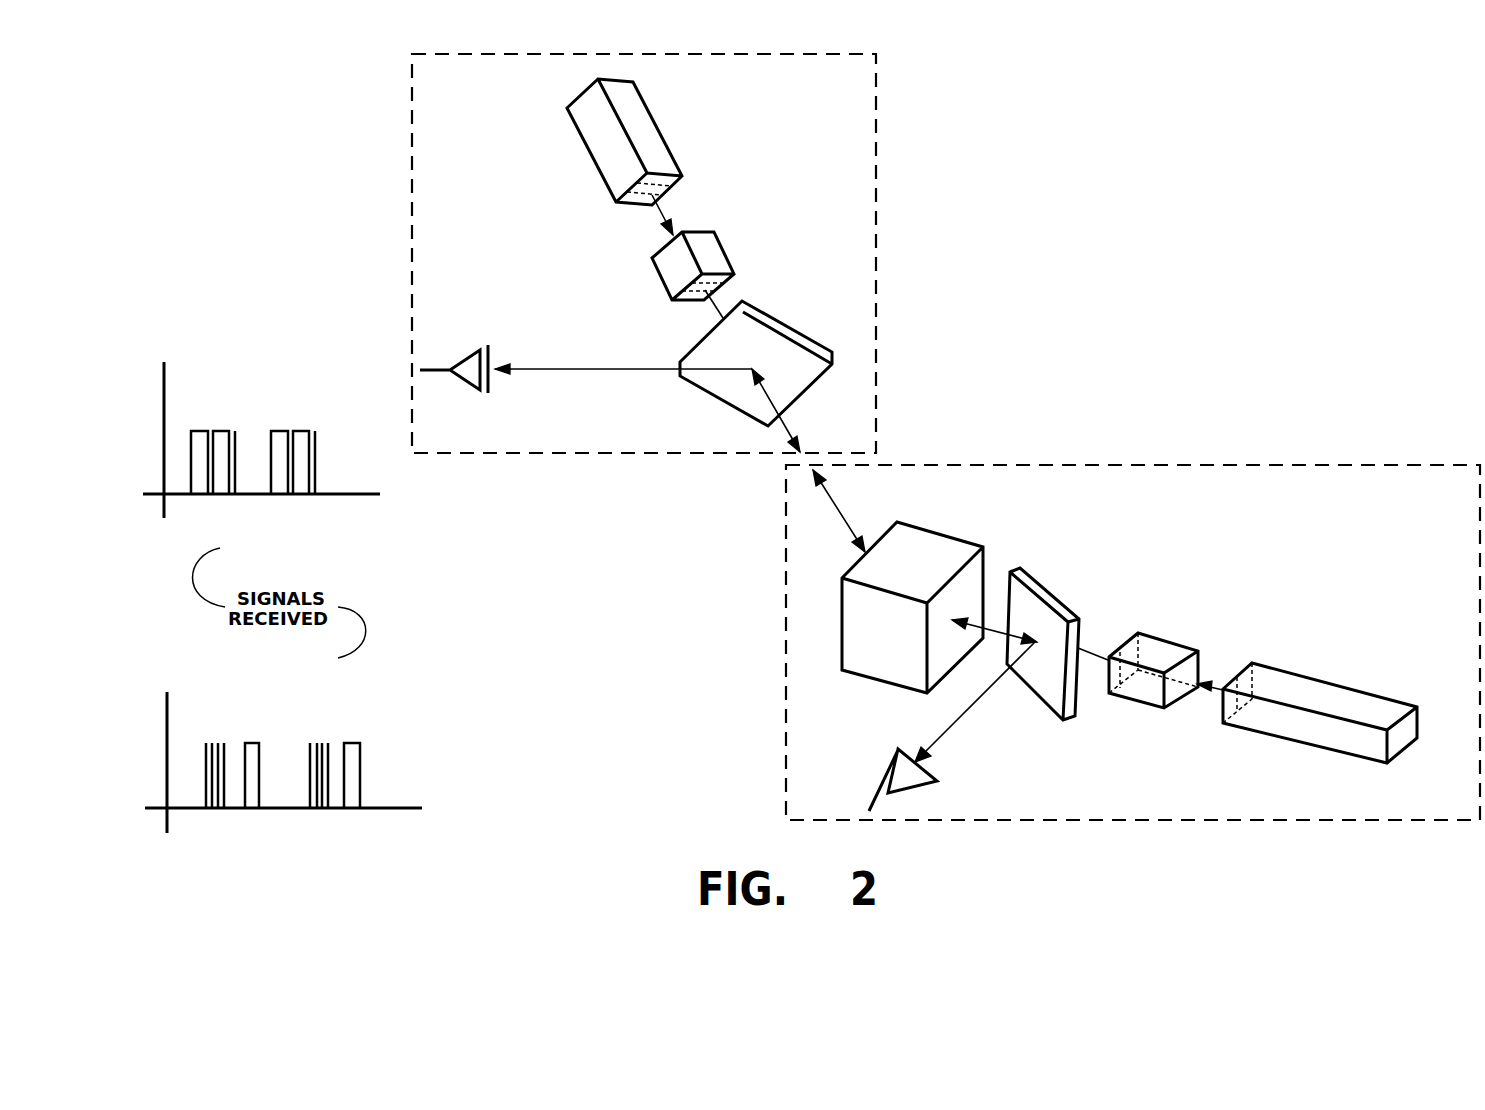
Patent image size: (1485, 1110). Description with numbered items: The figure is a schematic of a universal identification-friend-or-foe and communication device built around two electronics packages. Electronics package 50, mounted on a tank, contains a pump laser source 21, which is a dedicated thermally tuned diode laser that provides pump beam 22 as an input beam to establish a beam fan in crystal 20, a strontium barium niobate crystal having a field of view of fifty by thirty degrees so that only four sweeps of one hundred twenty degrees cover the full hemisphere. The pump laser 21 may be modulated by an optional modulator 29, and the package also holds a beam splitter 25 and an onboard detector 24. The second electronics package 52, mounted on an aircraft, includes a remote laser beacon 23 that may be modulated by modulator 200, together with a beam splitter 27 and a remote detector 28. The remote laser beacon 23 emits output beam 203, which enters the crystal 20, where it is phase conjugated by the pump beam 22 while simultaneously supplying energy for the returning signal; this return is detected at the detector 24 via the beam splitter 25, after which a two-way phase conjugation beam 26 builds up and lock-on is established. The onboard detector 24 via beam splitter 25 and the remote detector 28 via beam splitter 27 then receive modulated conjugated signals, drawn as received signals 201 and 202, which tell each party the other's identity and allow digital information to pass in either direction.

The crystal 20 is at (922, 538).
The pump laser source 21 is at (1280, 680).
The pump beam 22 is at (1215, 687).
The remote laser beacon 23 is at (582, 104).
The detector 24 is at (892, 772).
The beam splitter 25 is at (1030, 573).
The two-way phase conjugation beam 26 is at (808, 460).
The beam splitter 27 is at (773, 323).
The remote detector 28 is at (477, 353).
The modulator 29 is at (1133, 693).
The electronics package 50 is at (1355, 465).
The electronics package 52 is at (876, 310).
The modulator 200 is at (712, 243).
The received signal 201 is at (290, 518).
The received signal 202 is at (327, 720).
The output beam 203 is at (665, 216).